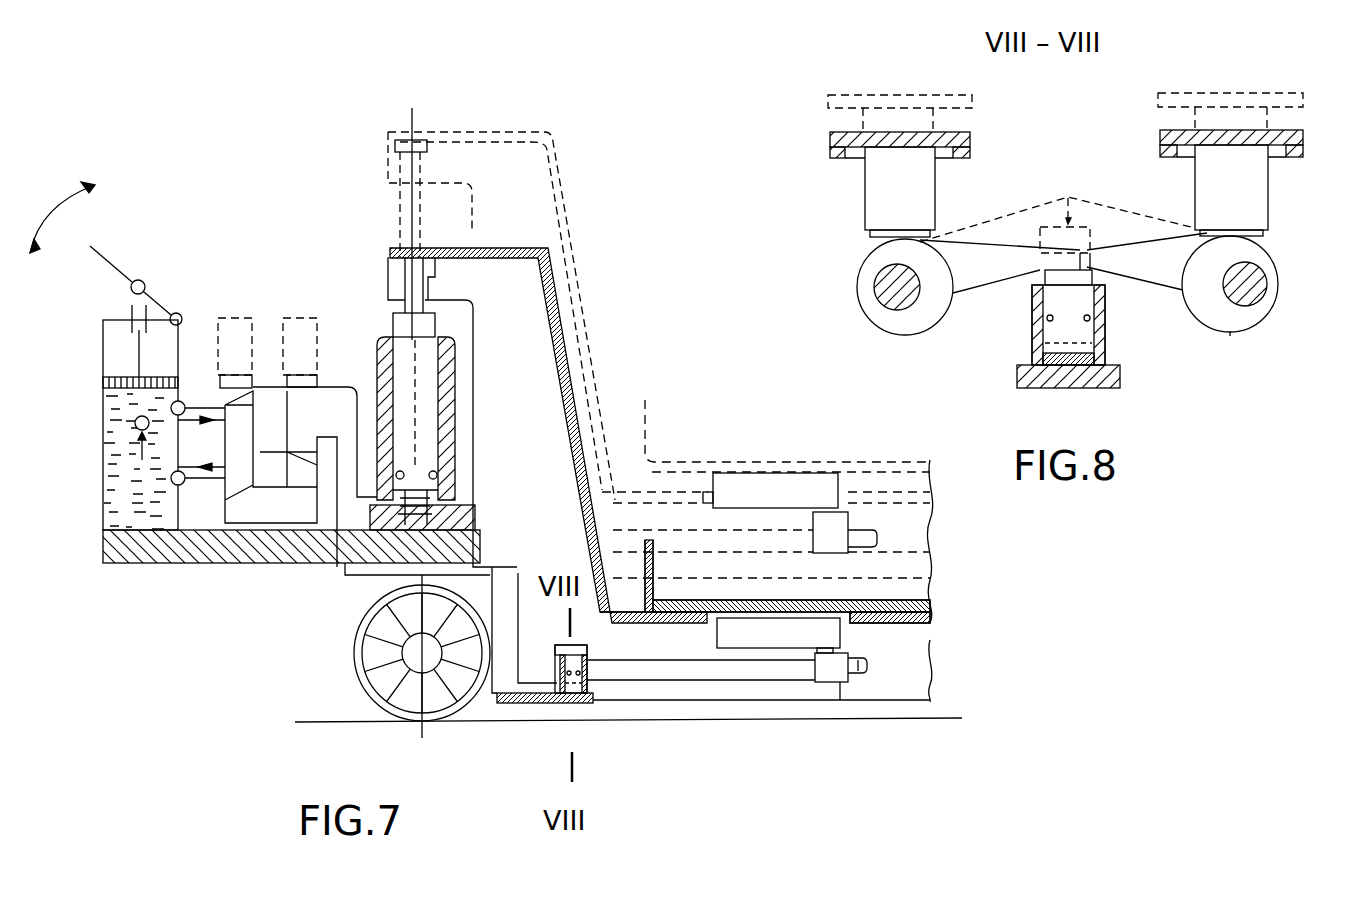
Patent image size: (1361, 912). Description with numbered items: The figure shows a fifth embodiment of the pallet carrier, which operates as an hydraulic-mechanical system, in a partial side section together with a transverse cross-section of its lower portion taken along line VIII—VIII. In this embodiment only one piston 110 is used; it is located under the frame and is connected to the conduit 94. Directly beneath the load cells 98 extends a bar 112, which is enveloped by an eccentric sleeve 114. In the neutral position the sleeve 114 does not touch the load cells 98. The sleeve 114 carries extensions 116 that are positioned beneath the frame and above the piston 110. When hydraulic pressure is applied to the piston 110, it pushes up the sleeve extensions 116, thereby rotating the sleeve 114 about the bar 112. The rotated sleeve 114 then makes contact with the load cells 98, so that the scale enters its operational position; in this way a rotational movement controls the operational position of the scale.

In FIG. 7, the conduit 94 is at (345, 578).
In FIG. 7, the load cells 98 is at (712, 640).
In FIG. 8, the load cells 98 is at (1262, 212).
In FIG. 7, the piston 110 is at (598, 697).
In FIG. 8, the piston 110 is at (1030, 338).
In FIG. 7, the bar 112 is at (866, 668).
In FIG. 8, the bar 112 is at (1258, 272).
In FIG. 7, the eccentric sleeve 114 is at (840, 700).
In FIG. 8, the eccentric sleeve 114 is at (1230, 333).
In FIG. 8, the sleeve extensions 116 is at (990, 245).